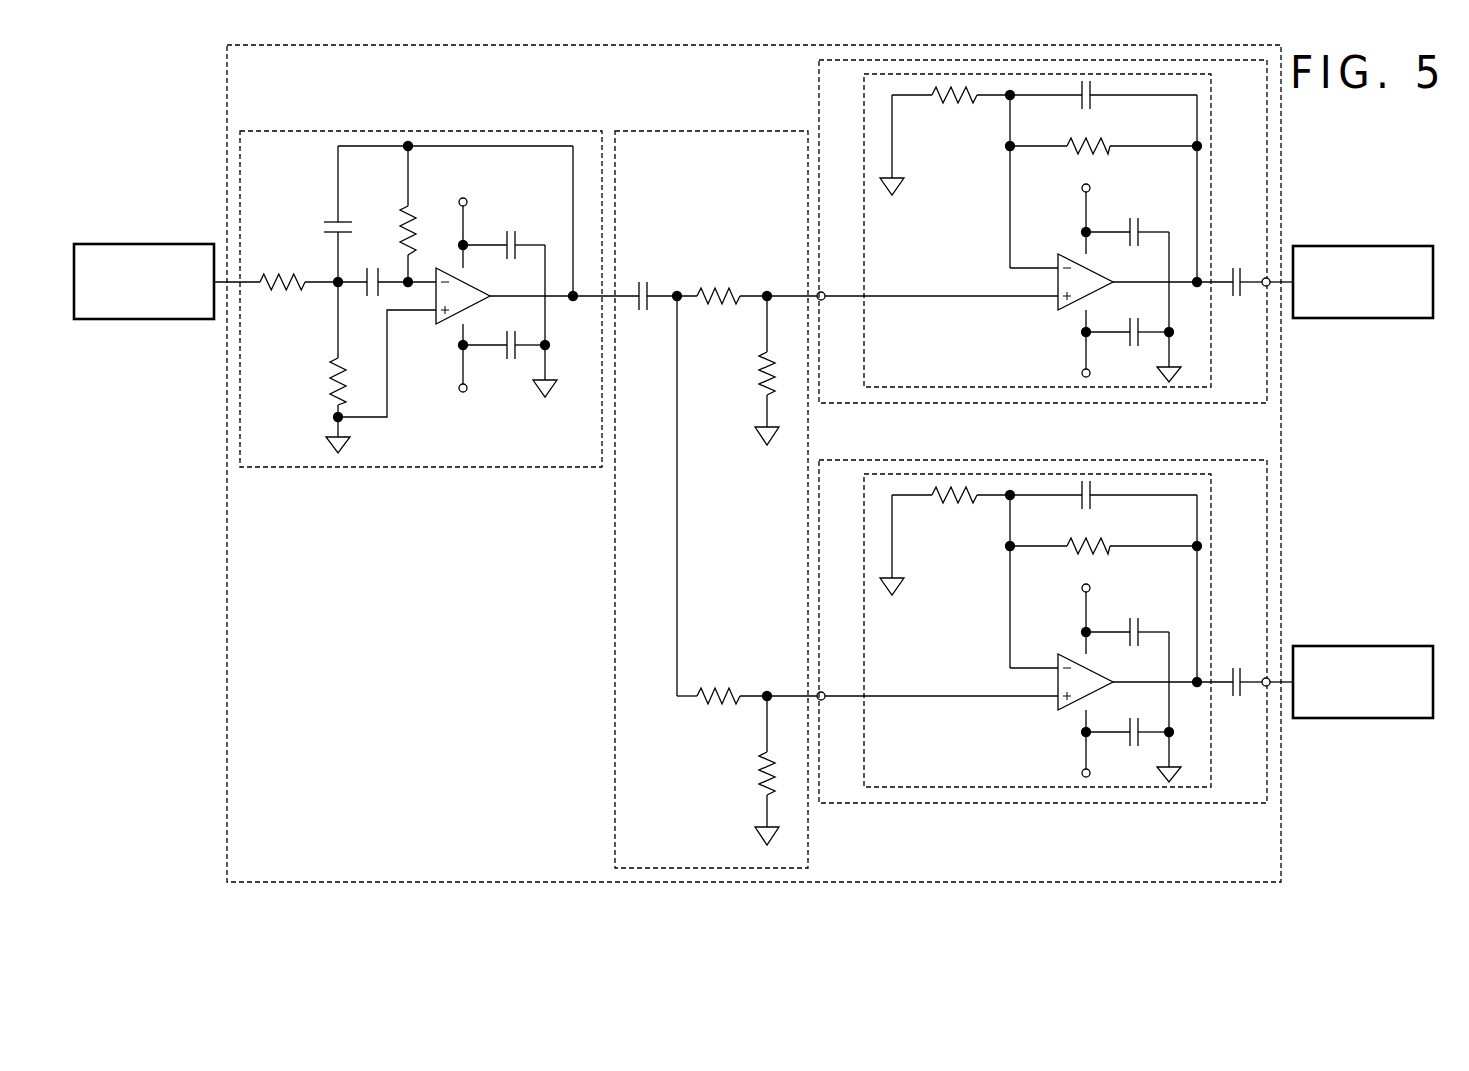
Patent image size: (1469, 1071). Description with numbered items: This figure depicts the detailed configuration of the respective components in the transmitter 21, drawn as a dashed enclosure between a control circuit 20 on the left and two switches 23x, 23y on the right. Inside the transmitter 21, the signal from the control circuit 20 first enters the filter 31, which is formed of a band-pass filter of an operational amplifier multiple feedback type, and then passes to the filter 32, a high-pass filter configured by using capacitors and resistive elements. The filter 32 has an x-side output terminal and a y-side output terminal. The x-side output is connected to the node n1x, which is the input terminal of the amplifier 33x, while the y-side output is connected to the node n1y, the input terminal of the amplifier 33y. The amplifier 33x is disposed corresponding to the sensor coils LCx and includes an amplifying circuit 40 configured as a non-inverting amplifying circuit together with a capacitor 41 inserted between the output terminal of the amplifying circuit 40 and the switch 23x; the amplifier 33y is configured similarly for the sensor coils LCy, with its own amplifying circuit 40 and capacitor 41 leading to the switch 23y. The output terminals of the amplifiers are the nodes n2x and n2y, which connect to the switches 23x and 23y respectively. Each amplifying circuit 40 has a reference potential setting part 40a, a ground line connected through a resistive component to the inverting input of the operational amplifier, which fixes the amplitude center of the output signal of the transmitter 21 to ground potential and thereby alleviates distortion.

The control circuit 20 is at (143, 319).
The transmitter 21 is at (753, 882).
The filter 31 is at (420, 130).
The filter 32 is at (712, 130).
The amplifier 33x is at (1056, 403).
The amplifier 33y is at (1056, 803).
The amplifying circuit 40 is at (960, 388).
The reference potential setting part 40a is at (893, 162).
The capacitor 41 is at (1229, 292).
The node n1x is at (824, 290).
The node n1y is at (824, 690).
The node n2x is at (1264, 278).
The node n2y is at (1264, 678).
The switch 23x is at (1360, 318).
The switch 23y is at (1360, 718).